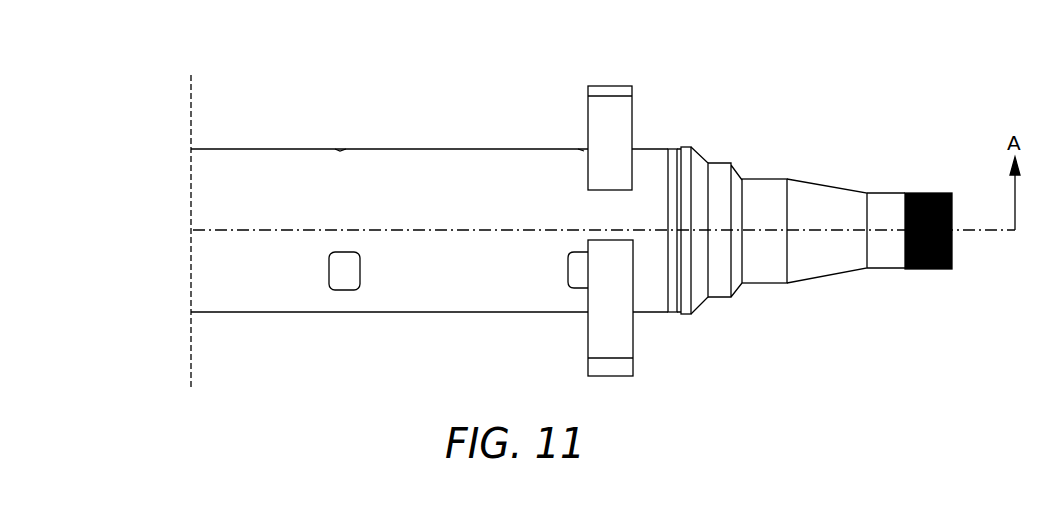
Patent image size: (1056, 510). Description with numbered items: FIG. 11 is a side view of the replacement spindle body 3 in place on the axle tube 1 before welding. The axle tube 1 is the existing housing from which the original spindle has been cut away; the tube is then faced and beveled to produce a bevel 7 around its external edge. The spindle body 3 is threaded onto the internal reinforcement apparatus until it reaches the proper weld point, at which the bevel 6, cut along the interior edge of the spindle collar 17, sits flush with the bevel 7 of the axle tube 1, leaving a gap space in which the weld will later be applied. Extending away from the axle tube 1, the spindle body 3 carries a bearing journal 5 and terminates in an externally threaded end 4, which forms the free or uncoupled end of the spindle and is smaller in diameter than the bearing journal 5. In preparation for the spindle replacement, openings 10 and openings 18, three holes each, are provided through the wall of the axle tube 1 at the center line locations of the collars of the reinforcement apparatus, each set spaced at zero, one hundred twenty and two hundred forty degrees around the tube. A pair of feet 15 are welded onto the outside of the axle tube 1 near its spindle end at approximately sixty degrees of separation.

The axle tube 1 is at (464, 148).
The spindle body 3 is at (717, 182).
The externally threaded end 4 is at (931, 192).
The bearing journal 5 is at (785, 178).
The bevel 6 is at (678, 158).
The bevel 7 is at (677, 160).
The openings 10 is at (343, 149).
The feet 15 is at (617, 85).
The spindle collar 17 is at (708, 162).
The openings 18 is at (577, 148).